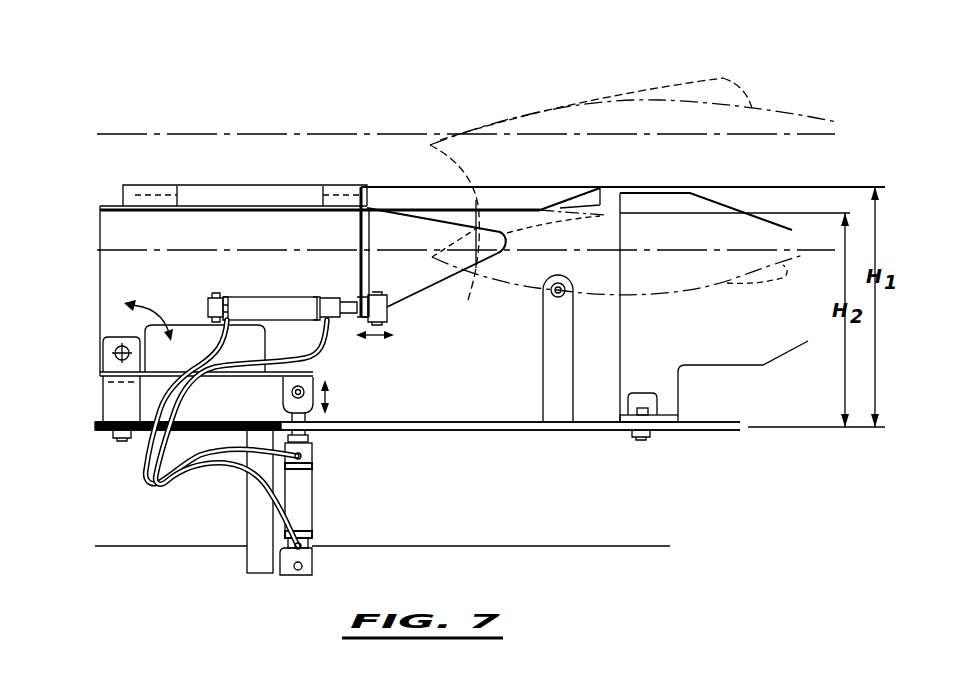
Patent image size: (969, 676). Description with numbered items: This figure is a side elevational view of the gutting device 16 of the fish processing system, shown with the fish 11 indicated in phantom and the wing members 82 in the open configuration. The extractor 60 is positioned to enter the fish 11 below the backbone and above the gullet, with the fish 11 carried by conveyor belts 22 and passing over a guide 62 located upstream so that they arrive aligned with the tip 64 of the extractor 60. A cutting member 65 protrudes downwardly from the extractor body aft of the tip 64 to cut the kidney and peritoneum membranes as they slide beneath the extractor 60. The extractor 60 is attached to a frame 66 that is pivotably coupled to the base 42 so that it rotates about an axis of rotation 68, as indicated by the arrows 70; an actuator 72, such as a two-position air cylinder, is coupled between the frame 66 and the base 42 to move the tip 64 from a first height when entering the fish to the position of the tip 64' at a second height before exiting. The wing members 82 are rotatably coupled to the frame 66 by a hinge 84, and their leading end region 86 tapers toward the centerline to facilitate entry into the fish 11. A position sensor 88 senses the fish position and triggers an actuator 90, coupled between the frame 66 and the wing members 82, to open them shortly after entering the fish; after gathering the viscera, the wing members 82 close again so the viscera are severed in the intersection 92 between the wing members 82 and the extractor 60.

The fish 11 is at (780, 112).
The gutting device 16 is at (600, 90).
The conveyor belts 22 is at (263, 134).
The base 42 is at (137, 430).
The extractor 60 is at (505, 190).
The guide 62 is at (708, 207).
The tip 64 is at (591, 183).
The tip 64' is at (587, 230).
The cutting member 65 is at (600, 203).
The frame 66 is at (187, 272).
The axis of rotation 68 is at (115, 353).
The arrows 70 is at (147, 318).
The actuator 72 is at (305, 489).
The wing members 82 is at (403, 284).
The hinge 84 is at (372, 230).
The leading end region 86 is at (496, 247).
The position sensor 88 is at (553, 297).
The actuator 90 is at (284, 305).
The intersection 92 is at (452, 212).